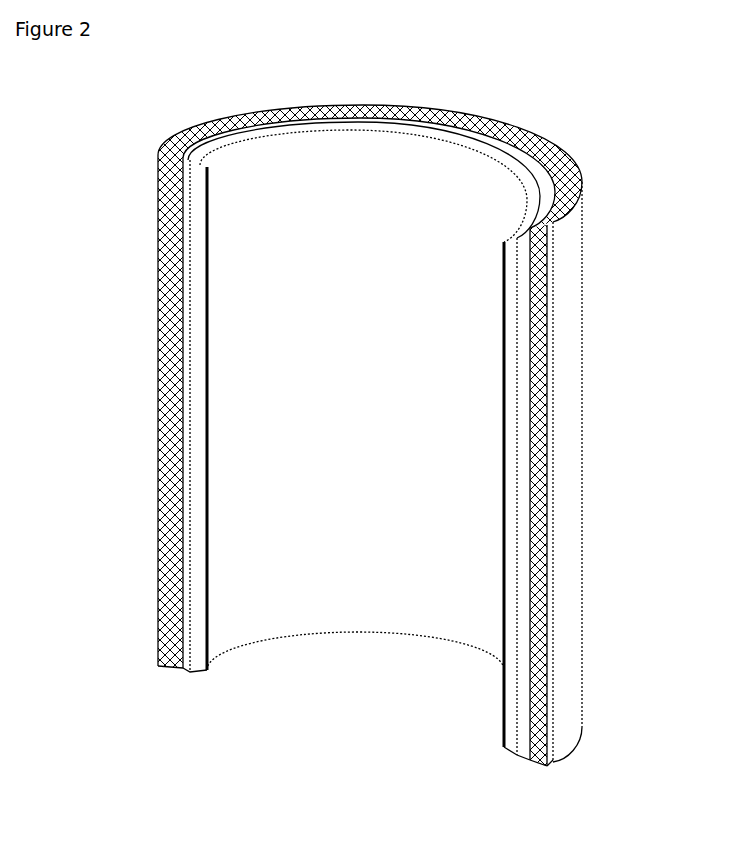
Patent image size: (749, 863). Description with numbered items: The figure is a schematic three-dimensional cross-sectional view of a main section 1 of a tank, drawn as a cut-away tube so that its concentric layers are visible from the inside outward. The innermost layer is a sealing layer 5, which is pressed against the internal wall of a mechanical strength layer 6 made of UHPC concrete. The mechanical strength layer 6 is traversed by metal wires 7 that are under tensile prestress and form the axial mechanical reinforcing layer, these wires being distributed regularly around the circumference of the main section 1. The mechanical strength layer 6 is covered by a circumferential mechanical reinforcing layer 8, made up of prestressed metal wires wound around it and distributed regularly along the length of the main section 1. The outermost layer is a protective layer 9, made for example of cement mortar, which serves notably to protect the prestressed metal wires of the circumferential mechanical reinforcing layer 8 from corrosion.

The main section 1 is at (611, 392).
The sealing layer 5 is at (504, 718).
The mechanical strength layer 6 is at (197, 315).
The metal wires 7 is at (548, 197).
The circumferential mechanical reinforcing layer 8 is at (161, 405).
The protective layer 9 is at (548, 462).